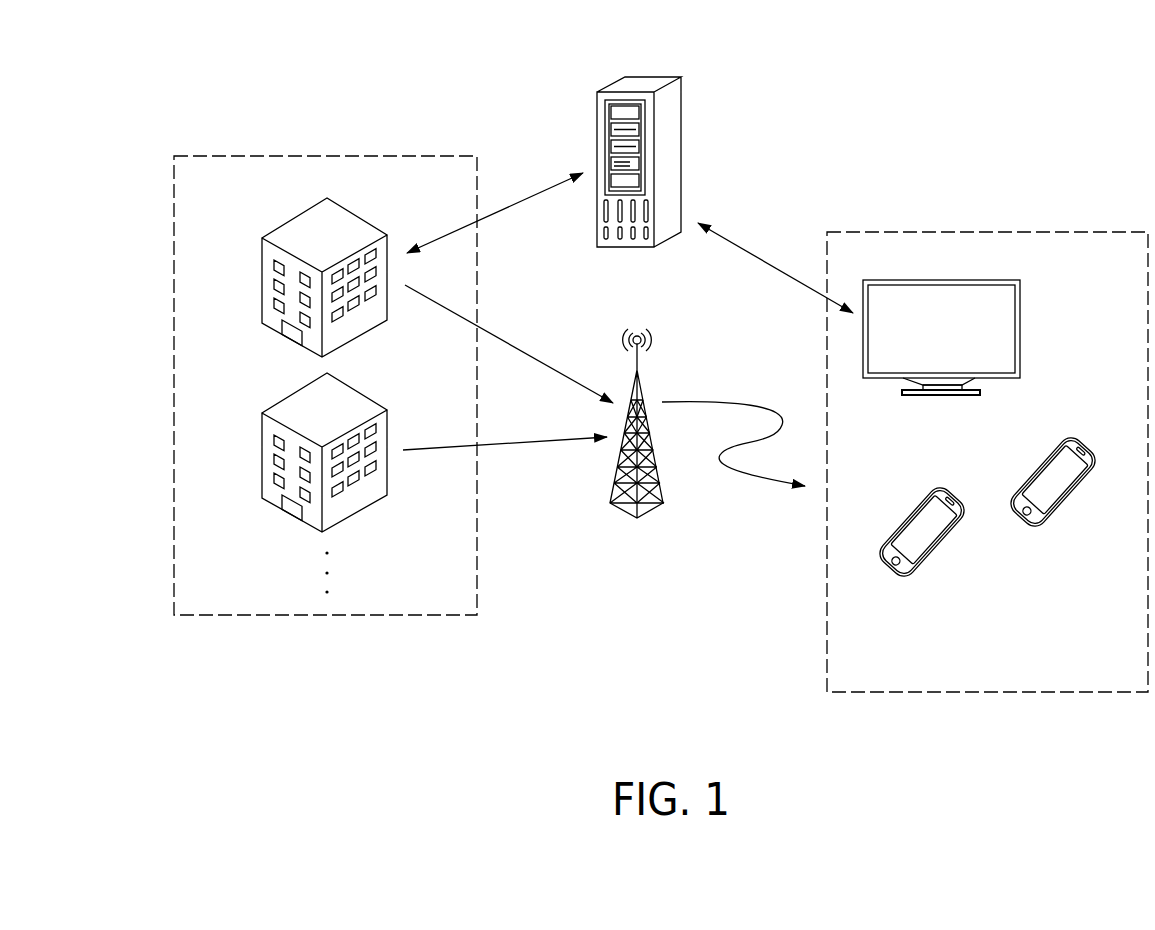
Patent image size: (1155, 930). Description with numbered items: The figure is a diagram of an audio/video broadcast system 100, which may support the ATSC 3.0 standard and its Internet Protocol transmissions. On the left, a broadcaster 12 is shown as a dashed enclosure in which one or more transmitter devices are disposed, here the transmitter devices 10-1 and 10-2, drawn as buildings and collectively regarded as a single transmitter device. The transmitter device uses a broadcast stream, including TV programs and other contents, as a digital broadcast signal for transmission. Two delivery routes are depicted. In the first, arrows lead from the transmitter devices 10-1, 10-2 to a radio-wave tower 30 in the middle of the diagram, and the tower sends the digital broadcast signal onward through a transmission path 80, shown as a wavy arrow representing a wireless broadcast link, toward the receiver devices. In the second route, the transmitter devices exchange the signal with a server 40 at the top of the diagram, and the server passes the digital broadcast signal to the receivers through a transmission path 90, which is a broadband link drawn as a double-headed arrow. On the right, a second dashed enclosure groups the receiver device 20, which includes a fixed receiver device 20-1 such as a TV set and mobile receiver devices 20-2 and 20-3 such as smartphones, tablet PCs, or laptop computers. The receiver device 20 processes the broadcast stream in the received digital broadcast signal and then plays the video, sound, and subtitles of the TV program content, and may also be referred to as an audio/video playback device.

The audio/video broadcast system 100 is at (602, 662).
The broadcaster 12 is at (323, 156).
The transmitter device 10-1 is at (278, 213).
The transmitter device 10-2 is at (292, 533).
The server 40 is at (630, 82).
The radio-wave tower 30 is at (637, 520).
The transmission path 80 is at (722, 405).
The transmission path 90 is at (757, 250).
The receiver device 20 is at (988, 232).
The fixed receiver device 20-1 is at (1020, 328).
The mobile receiver device 20-2 is at (908, 570).
The mobile receiver device 20-3 is at (1040, 522).